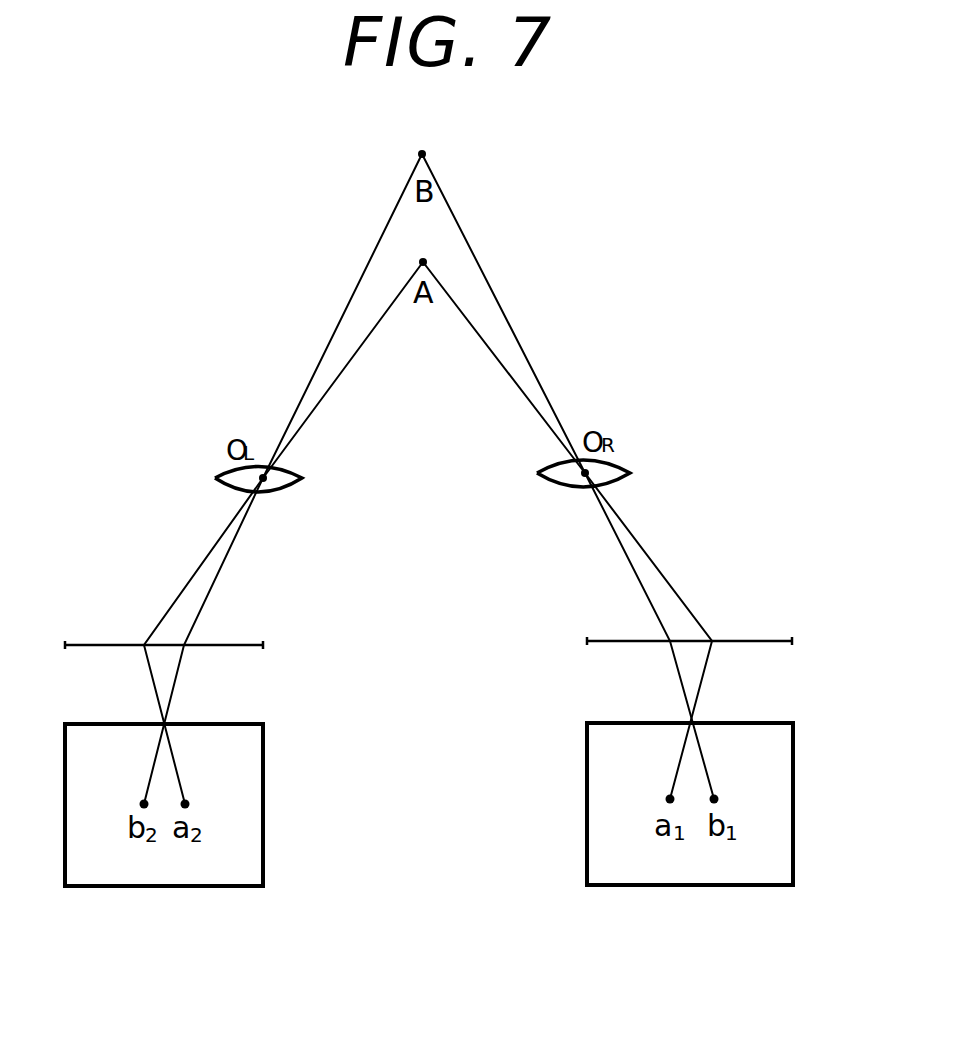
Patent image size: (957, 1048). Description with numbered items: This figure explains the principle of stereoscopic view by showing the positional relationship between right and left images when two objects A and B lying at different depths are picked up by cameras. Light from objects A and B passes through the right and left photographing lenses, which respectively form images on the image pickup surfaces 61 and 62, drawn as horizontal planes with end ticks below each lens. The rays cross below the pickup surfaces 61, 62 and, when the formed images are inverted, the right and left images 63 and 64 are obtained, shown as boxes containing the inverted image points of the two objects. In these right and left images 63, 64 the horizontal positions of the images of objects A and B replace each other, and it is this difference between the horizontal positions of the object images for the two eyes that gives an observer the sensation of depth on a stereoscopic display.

The image pickup surface 61 is at (754, 641).
The image pickup surface 62 is at (245, 643).
The right image 63 is at (795, 800).
The left image 64 is at (265, 790).